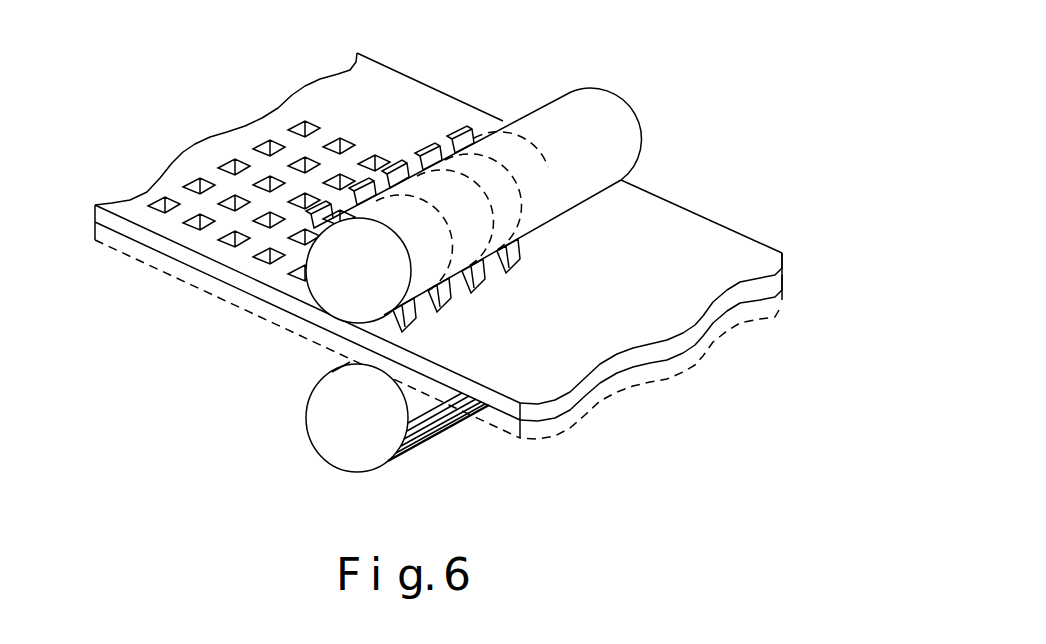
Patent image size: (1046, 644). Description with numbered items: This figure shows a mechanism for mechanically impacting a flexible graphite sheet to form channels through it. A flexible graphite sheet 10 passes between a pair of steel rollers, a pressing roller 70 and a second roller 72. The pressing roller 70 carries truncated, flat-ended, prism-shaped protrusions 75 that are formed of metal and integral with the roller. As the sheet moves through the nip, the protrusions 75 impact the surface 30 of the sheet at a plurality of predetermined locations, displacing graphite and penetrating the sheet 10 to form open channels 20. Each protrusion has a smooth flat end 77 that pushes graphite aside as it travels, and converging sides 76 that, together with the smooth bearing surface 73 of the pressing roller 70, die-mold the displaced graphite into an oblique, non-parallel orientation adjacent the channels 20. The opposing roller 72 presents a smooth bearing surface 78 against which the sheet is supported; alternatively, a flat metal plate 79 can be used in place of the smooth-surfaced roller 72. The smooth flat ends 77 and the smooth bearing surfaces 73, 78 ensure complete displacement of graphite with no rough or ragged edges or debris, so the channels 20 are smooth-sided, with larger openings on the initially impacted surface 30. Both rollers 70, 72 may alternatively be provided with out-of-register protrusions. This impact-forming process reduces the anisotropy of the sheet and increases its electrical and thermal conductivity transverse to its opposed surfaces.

The sheet 10 is at (715, 219).
The channels 20 is at (228, 155).
The surface 30 is at (423, 110).
The pressing roller 70 is at (597, 100).
The roller 72 is at (340, 400).
The smooth bearing surface 73 is at (428, 172).
The protrusions 75 is at (470, 145).
The sides 76 is at (468, 128).
The flat ends 77 is at (277, 235).
The smooth bearing surface 78 is at (420, 437).
The flat metal plate 79 is at (630, 363).